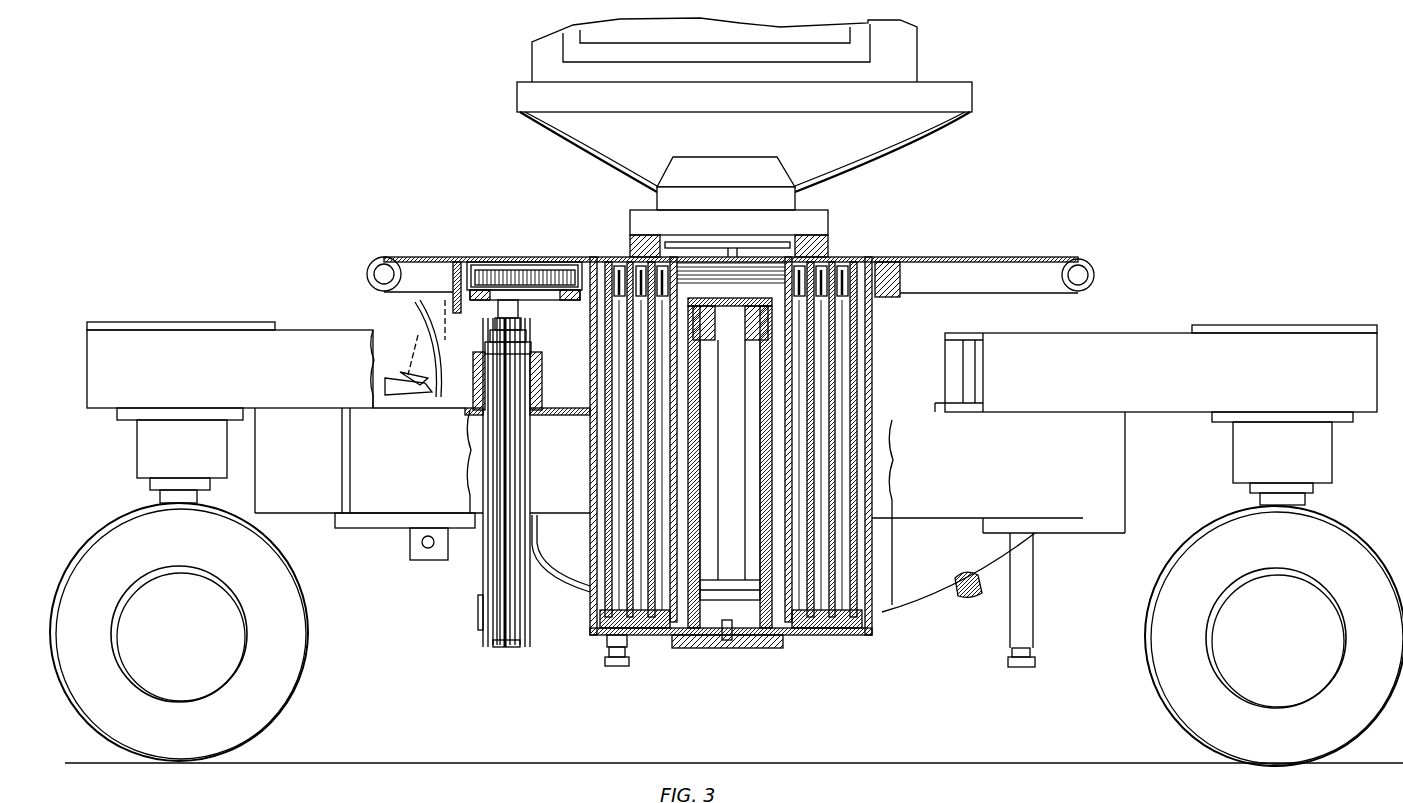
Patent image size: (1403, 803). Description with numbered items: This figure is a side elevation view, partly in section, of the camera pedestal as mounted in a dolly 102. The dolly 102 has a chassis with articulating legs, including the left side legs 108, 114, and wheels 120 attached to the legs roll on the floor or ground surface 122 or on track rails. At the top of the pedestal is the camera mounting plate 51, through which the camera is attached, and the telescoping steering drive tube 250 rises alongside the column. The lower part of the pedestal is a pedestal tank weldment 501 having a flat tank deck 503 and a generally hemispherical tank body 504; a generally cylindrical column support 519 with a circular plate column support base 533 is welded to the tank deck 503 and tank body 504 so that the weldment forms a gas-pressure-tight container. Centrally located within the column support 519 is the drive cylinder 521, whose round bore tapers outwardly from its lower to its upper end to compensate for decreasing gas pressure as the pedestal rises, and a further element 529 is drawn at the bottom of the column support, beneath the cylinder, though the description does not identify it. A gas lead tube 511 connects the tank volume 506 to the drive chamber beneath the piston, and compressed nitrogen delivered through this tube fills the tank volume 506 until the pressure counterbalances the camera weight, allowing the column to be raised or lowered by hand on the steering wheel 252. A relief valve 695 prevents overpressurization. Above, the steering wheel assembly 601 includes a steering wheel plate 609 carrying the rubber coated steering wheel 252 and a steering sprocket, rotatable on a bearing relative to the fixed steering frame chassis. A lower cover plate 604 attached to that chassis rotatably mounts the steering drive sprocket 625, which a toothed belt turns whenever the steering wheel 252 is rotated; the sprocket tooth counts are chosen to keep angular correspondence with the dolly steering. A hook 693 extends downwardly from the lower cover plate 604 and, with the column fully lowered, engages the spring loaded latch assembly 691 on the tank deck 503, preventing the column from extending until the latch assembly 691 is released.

The camera mounting plate 51 is at (758, 265).
The dolly 102 is at (340, 555).
The left side leg 108 is at (113, 345).
The left side leg 114 is at (1220, 340).
The wheels 120 is at (296, 690).
The floor or ground surface 122 is at (421, 757).
The telescoping steering drive tube 250 is at (478, 590).
The steering wheel 252 is at (1095, 275).
The pedestal tank weldment 501 is at (882, 615).
The tank deck 503 is at (560, 405).
The tank body 504 is at (925, 602).
The tank volume 506 is at (567, 583).
The gas lead tube 511 is at (728, 642).
The column support 519 is at (872, 392).
The drive cylinder 521 is at (768, 388).
The bottom cap 529 is at (690, 645).
The column support base 533 is at (652, 632).
The steering wheel assembly 601 is at (482, 300).
The lower cover plate 604 is at (567, 296).
The steering wheel plate 609 is at (503, 258).
The steering drive sprocket 625 is at (540, 258).
The latch assembly 691 is at (435, 328).
The hook 693 is at (455, 275).
The relief valve 695 is at (968, 578).